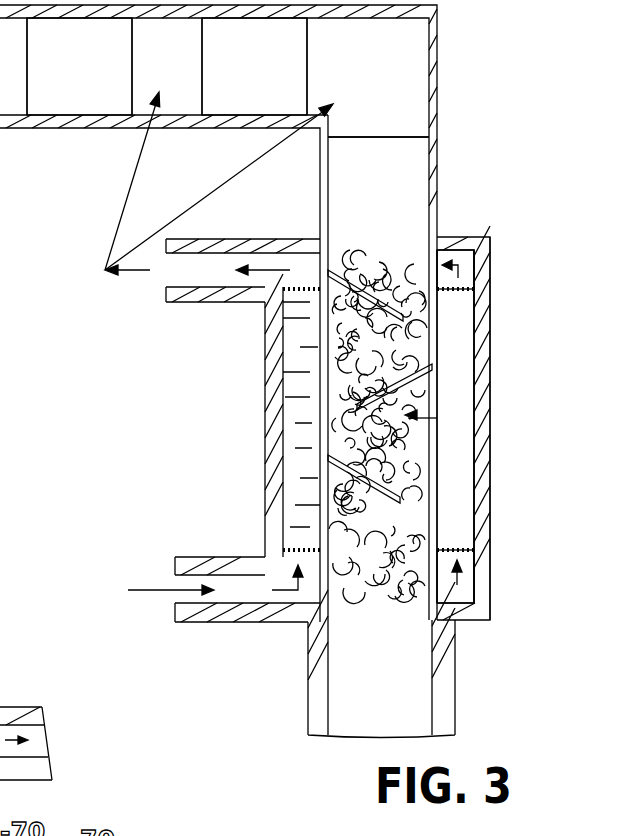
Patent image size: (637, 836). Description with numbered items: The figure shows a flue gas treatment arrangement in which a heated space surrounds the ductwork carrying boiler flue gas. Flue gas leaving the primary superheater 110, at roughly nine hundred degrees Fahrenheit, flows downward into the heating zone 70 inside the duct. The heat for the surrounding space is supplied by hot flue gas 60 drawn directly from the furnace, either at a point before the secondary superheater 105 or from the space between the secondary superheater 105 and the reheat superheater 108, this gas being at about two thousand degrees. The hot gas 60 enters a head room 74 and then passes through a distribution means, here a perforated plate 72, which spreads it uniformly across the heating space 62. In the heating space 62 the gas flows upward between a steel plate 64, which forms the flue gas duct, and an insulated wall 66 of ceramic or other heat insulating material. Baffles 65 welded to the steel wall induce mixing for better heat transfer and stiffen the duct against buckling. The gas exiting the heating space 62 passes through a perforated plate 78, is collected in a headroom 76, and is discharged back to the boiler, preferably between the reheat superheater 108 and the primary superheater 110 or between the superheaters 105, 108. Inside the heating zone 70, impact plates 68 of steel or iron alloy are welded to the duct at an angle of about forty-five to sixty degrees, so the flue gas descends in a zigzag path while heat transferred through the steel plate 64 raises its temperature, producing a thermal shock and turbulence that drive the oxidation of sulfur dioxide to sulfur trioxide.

The secondary superheater 105 is at (97, 77).
The reheat superheater 108 is at (272, 77).
The primary superheater 110 is at (397, 205).
The hot flue gas 60 is at (135, 172).
The heating space 62 is at (300, 412).
The steel plate 64 is at (300, 385).
The baffles 65 is at (307, 450).
The insulated wall 66 is at (493, 488).
The impact plates 68 is at (437, 395).
The heating zone 70 is at (437, 418).
The perforated plate 72 is at (287, 545).
The head room 74 is at (470, 588).
The headroom 76 is at (467, 265).
The perforated plate 78 is at (468, 293).